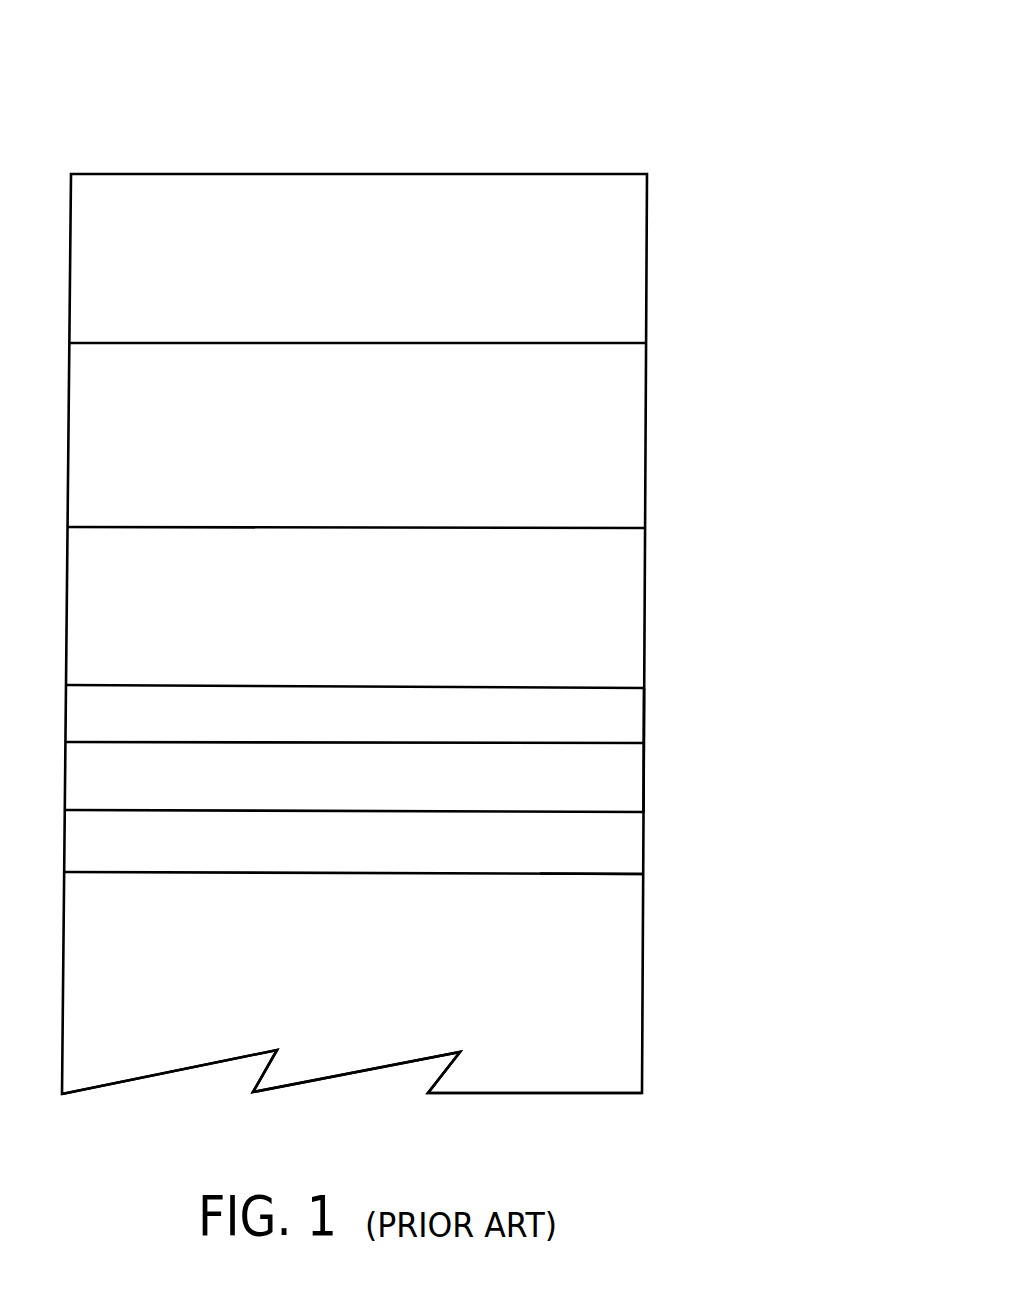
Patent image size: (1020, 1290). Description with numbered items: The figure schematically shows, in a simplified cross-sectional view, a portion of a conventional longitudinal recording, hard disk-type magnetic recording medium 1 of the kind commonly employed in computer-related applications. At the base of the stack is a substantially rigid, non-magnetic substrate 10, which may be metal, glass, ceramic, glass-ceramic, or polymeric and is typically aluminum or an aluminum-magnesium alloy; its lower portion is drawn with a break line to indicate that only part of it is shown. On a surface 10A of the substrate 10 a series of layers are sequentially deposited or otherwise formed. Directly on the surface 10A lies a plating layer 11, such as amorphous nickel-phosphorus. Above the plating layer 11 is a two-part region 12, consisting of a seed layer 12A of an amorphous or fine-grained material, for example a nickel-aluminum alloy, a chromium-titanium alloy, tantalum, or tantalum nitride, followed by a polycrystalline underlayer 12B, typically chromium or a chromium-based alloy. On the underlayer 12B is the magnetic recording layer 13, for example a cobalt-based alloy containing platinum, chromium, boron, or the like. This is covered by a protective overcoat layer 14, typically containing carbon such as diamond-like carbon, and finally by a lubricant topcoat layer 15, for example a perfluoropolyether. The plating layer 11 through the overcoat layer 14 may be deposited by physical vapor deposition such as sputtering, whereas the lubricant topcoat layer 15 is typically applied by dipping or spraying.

The longitudinal recording, hard disk-type magnetic recording medium 1 is at (530, 144).
The substrate 10 is at (645, 988).
The surface 10A is at (603, 875).
The plating layer 11 is at (646, 845).
The seed layer and underlayer 12 is at (797, 693).
The seed layer 12A is at (646, 777).
The polycrystalline underlayer 12B is at (646, 715).
The magnetic recording layer 13 is at (647, 605).
The protective overcoat layer 14 is at (648, 432).
The lubricant topcoat layer 15 is at (650, 255).